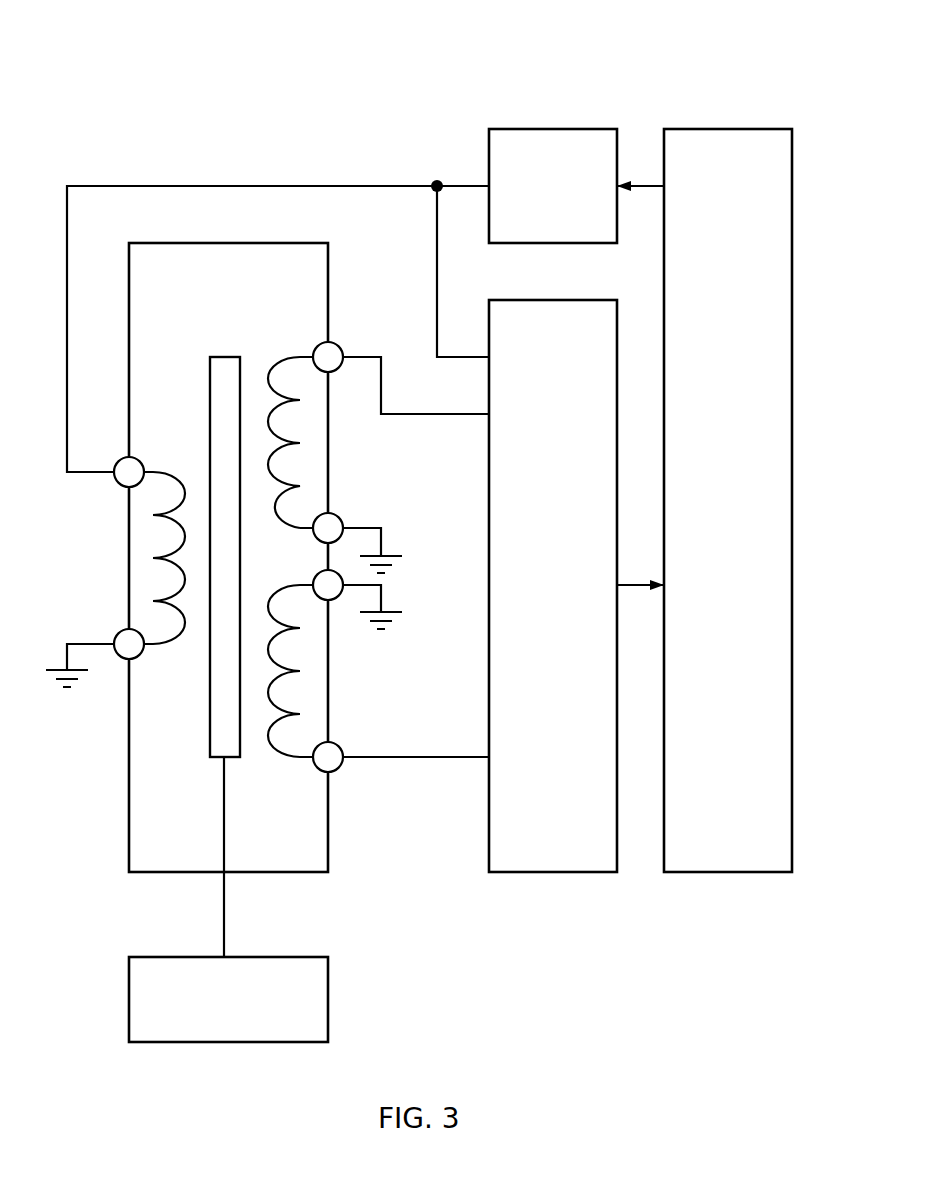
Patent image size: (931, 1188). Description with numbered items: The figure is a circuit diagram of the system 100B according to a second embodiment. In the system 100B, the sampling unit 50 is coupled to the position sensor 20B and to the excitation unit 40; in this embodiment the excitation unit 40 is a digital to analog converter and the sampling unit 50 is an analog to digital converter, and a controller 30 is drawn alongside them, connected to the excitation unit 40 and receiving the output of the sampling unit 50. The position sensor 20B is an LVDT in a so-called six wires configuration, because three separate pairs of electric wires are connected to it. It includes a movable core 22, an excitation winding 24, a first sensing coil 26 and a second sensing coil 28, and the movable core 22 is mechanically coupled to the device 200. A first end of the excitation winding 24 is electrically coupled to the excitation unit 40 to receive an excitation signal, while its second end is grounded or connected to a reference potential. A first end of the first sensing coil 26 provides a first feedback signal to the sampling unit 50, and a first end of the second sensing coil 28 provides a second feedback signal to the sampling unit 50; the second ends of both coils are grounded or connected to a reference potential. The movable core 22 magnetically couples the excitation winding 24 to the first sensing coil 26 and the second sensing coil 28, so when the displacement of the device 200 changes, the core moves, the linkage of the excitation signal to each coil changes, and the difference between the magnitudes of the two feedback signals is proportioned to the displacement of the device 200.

The system 100B is at (439, 40).
The position sensor 20B is at (228, 243).
The movable core 22 is at (226, 357).
The excitation winding 24 is at (153, 472).
The first sensing coil 26 is at (277, 357).
The second sensing coil 28 is at (275, 586).
The controller 30 is at (729, 129).
The excitation unit 40 is at (553, 129).
The sampling unit 50 is at (553, 300).
The device 200 is at (268, 957).